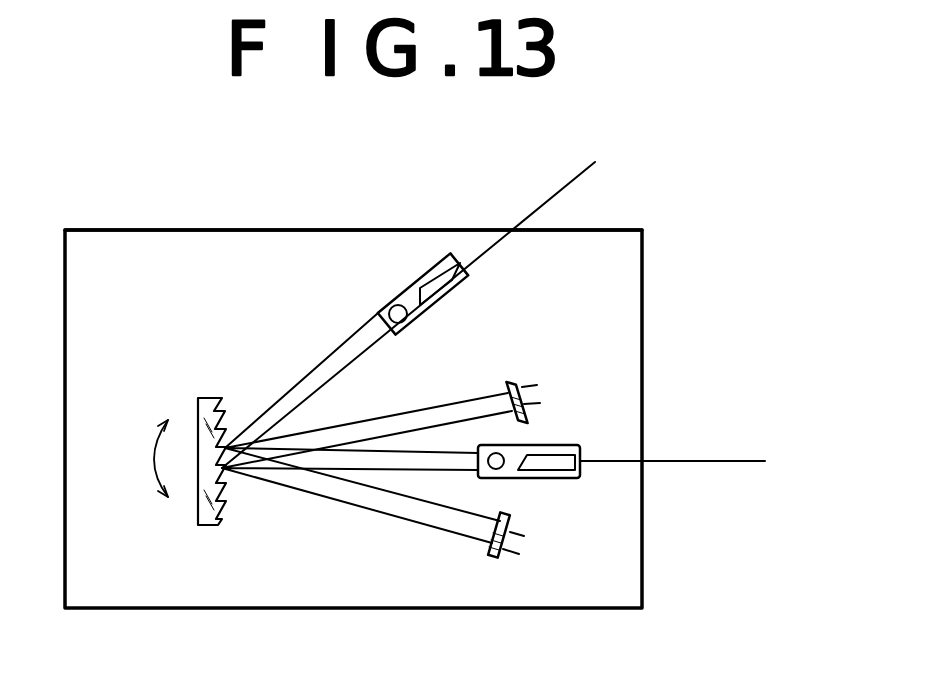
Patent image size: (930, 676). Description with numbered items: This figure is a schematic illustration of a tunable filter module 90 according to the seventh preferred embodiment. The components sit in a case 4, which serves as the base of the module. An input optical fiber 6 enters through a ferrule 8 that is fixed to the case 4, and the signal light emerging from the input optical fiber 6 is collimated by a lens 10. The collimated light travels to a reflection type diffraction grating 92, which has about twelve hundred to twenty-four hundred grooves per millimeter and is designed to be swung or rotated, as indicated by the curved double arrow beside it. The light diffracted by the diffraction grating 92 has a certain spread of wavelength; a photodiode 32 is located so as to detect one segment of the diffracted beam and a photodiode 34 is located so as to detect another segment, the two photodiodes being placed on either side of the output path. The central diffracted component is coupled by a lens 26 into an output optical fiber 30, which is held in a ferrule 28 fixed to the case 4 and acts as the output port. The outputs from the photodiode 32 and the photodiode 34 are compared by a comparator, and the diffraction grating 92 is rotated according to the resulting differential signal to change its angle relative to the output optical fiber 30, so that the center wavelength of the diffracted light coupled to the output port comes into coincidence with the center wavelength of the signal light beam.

The case 4 is at (213, 229).
The tunable filter module 90 is at (332, 228).
The reflection type diffraction grating 92 is at (207, 399).
The input optical fiber 6 is at (578, 168).
The lens 10 is at (385, 308).
The ferrule 8 is at (445, 283).
The photodiode 32 is at (521, 381).
The photodiode 34 is at (500, 557).
The lens 26 is at (505, 477).
The ferrule 28 is at (565, 455).
The output optical fiber 30 is at (690, 458).